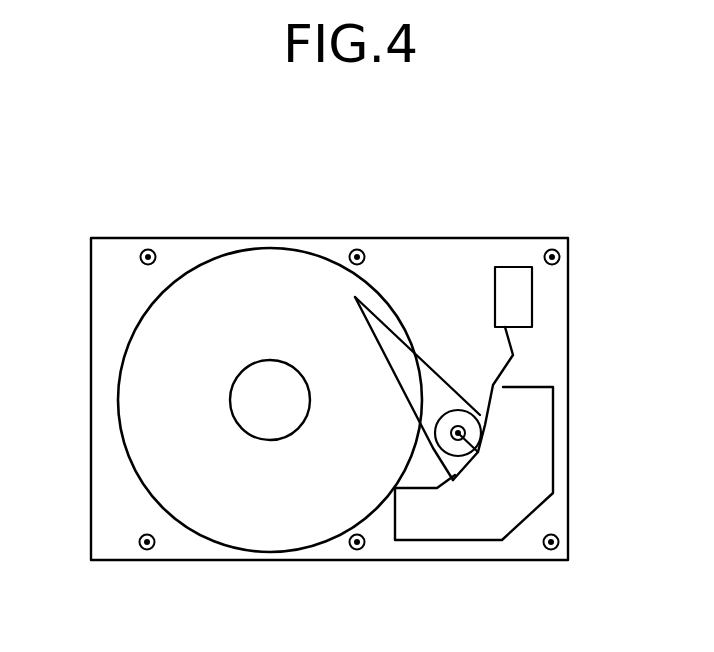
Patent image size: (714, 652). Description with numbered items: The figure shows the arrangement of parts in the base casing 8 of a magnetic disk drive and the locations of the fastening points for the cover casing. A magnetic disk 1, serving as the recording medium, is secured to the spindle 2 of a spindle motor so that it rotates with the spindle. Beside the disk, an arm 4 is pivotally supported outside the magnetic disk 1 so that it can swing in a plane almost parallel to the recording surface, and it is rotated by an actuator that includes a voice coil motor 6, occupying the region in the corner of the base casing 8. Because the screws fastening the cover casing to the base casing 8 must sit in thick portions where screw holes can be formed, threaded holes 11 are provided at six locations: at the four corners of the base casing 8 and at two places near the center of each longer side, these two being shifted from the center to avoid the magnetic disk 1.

The magnetic disk 1 is at (145, 401).
The spindle 2 is at (265, 415).
The arm 4 is at (408, 370).
The voice coil motor 6 is at (455, 518).
The base casing 8 is at (568, 350).
The threaded holes 11 is at (147, 249).